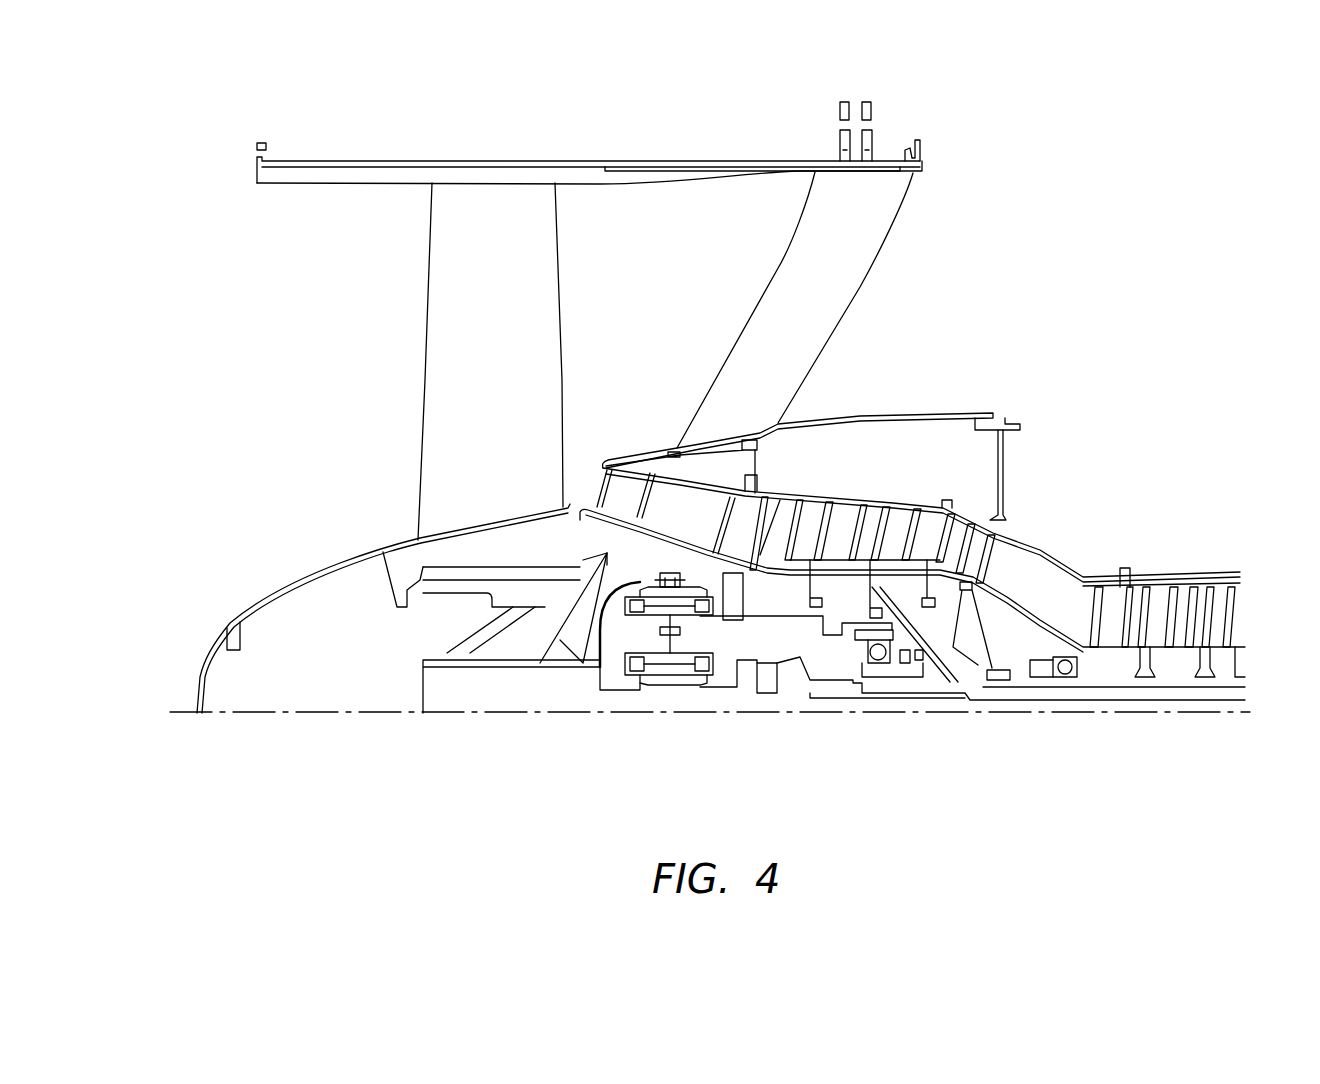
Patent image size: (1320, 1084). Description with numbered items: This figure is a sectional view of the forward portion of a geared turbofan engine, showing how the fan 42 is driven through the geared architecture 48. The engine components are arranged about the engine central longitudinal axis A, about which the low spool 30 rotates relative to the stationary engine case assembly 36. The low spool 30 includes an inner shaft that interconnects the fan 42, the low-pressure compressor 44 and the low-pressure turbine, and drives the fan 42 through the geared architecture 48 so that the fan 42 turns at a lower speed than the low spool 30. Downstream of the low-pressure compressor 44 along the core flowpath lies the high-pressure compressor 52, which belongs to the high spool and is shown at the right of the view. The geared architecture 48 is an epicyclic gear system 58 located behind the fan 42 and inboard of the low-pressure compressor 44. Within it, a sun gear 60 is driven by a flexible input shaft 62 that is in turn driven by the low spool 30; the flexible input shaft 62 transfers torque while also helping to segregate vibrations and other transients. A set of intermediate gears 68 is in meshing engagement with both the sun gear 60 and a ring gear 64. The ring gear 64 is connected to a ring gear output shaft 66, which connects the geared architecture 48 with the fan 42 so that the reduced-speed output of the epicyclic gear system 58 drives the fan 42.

The low spool 30 is at (957, 693).
The engine case assembly 36 is at (993, 413).
The fan 42 is at (503, 345).
The low-pressure compressor 44 is at (875, 511).
The geared architecture 48 is at (705, 736).
The high-pressure compressor 52 is at (1195, 600).
The epicyclic gear system 58 is at (592, 691).
The sun gear 60 is at (650, 687).
The flexible input shaft 62 is at (777, 695).
The ring gear 64 is at (656, 578).
The ring gear output shaft 66 is at (603, 590).
The intermediate gears 68 is at (650, 608).
The engine central longitudinal axis A is at (1205, 712).